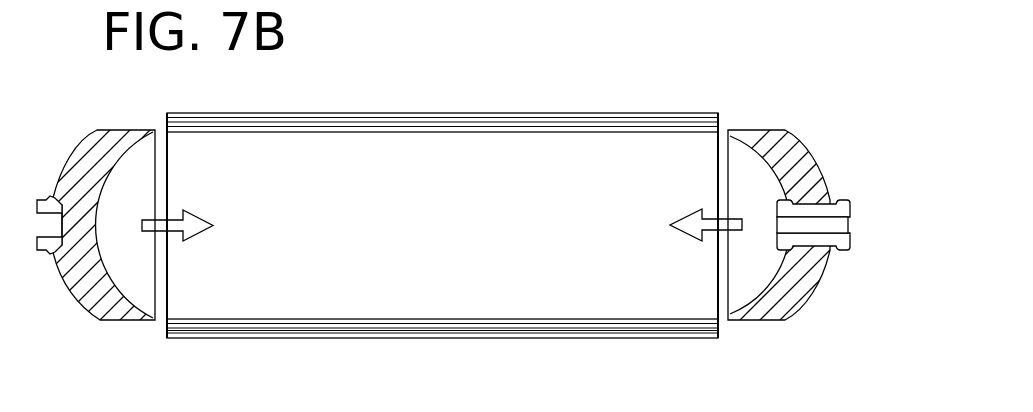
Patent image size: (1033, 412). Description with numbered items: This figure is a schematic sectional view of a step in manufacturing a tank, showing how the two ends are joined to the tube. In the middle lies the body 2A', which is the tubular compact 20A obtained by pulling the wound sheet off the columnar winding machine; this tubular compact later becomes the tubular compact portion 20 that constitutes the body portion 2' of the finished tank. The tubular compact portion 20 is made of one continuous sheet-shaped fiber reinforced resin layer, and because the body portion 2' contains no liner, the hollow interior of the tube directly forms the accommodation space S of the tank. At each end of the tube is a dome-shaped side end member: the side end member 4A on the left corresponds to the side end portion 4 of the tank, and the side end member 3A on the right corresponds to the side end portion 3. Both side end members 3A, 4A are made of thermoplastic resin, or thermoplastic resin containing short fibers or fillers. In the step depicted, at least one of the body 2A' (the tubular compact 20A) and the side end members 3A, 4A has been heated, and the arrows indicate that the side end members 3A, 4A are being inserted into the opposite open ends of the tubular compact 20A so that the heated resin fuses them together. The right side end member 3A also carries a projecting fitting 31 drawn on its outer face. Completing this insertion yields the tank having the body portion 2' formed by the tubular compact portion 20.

The body 2A' is at (442, 192).
The body portion 2' is at (442, 192).
The tubular compact 20A is at (450, 112).
The tubular compact portion 20 is at (442, 192).
The accommodation space S is at (450, 283).
The side end member 4A is at (80, 275).
The side end portion 4 is at (190, 248).
The side end member 3A is at (805, 270).
The side end portion 3 is at (790, 248).
The connecting portion 31 is at (800, 226).